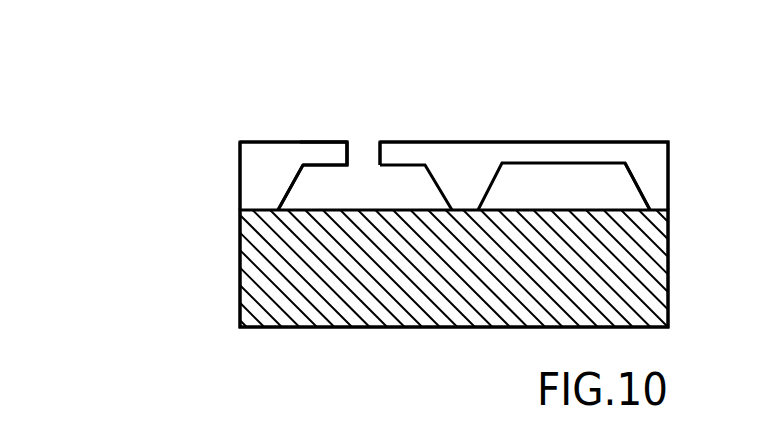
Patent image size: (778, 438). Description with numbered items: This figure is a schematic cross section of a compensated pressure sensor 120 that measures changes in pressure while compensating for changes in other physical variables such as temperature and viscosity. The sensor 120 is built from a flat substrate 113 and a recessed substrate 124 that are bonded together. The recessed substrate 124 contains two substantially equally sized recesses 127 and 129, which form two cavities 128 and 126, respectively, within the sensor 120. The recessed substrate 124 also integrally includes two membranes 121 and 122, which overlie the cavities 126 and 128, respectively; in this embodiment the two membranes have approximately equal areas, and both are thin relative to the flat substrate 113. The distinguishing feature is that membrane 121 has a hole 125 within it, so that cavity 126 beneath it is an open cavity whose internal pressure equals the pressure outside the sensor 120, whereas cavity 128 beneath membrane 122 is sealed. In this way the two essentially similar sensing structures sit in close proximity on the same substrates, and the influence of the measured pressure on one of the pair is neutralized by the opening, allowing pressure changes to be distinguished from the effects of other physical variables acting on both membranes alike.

The sensor 120 is at (178, 145).
The flat substrate 113 is at (265, 263).
The recessed substrate 124 is at (258, 183).
The cavity 126 is at (312, 193).
The membrane 121 is at (340, 153).
The hole 125 is at (365, 153).
The membrane 122 is at (603, 155).
The recess 129 is at (435, 190).
The recess 127 is at (496, 183).
The cavity 128 is at (602, 192).